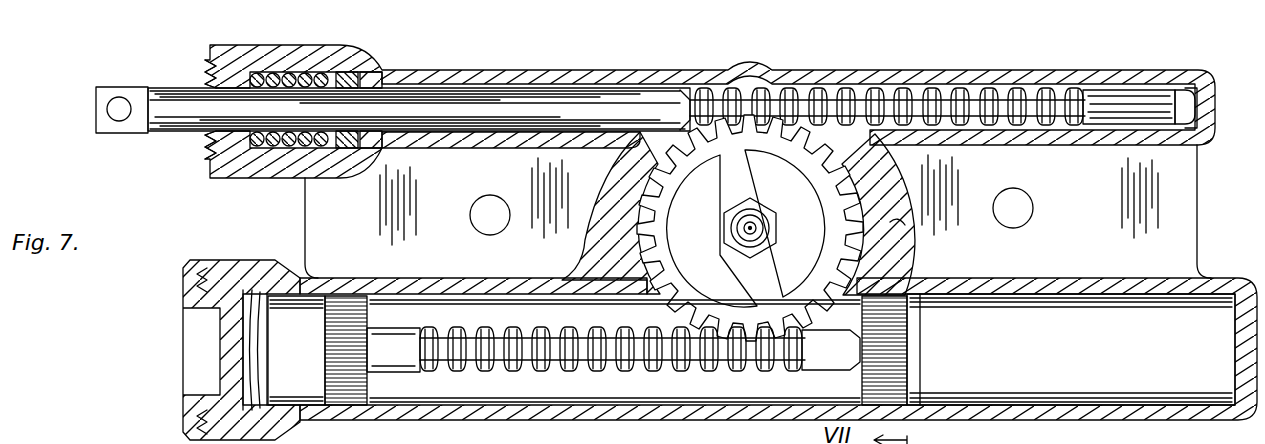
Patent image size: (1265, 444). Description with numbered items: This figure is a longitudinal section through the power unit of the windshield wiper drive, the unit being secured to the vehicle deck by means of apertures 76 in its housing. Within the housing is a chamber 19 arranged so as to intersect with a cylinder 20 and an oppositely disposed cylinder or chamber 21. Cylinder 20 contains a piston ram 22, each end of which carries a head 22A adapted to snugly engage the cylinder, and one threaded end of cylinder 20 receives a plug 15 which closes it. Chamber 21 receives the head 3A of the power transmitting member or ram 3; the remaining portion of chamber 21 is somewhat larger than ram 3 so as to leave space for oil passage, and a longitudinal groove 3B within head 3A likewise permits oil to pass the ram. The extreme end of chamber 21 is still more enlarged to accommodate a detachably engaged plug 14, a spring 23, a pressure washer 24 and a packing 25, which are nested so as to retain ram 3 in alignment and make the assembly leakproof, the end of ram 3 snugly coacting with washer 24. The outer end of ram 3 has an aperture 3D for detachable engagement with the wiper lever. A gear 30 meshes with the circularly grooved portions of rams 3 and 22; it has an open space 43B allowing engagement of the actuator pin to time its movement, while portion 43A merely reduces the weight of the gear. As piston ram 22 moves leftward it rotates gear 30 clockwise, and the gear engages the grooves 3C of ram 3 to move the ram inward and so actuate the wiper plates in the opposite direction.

The power transmitting member or ram 3 is at (178, 120).
The head 3A is at (1130, 92).
The longitudinal groove 3B is at (1185, 95).
The grooves 3C is at (1020, 92).
The aperture 3D is at (108, 110).
The plug 14 is at (208, 76).
The plug 15 is at (200, 350).
The chamber 19 is at (855, 182).
The cylinder 20 is at (802, 349).
The cylinder or chamber 21 is at (1188, 128).
The piston ram 22 is at (585, 360).
The head 22A is at (338, 350).
The spring 23 is at (303, 73).
The pressure washer 24 is at (346, 73).
The packing 25 is at (372, 85).
The gear 30 is at (905, 225).
The portion 43A is at (712, 231).
The open space 43B is at (787, 223).
The apertures 76 is at (497, 228).